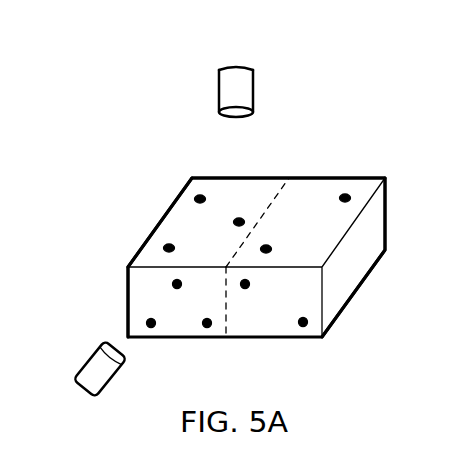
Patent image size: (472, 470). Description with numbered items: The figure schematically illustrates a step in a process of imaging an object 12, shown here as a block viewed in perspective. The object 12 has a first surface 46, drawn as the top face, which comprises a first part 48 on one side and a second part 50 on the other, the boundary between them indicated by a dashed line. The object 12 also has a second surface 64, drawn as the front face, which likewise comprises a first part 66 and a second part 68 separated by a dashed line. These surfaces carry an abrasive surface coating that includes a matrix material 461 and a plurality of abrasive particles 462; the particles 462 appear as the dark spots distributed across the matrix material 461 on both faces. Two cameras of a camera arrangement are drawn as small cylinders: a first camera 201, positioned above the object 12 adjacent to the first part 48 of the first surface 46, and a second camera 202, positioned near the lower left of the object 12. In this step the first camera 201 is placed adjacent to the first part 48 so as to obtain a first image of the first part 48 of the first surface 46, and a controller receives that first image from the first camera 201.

The object 12 is at (382, 158).
The first surface 46 is at (313, 226).
The first part of the first surface 48 is at (175, 227).
The second part of the first surface 50 is at (315, 193).
The second surface 64 is at (300, 288).
The first part of the second surface 66 is at (150, 282).
The second part of the second surface 68 is at (268, 320).
The matrix material 461 is at (236, 200).
The abrasive particles 462 is at (199, 197).
The first camera 201 is at (236, 83).
The second camera 202 is at (93, 375).